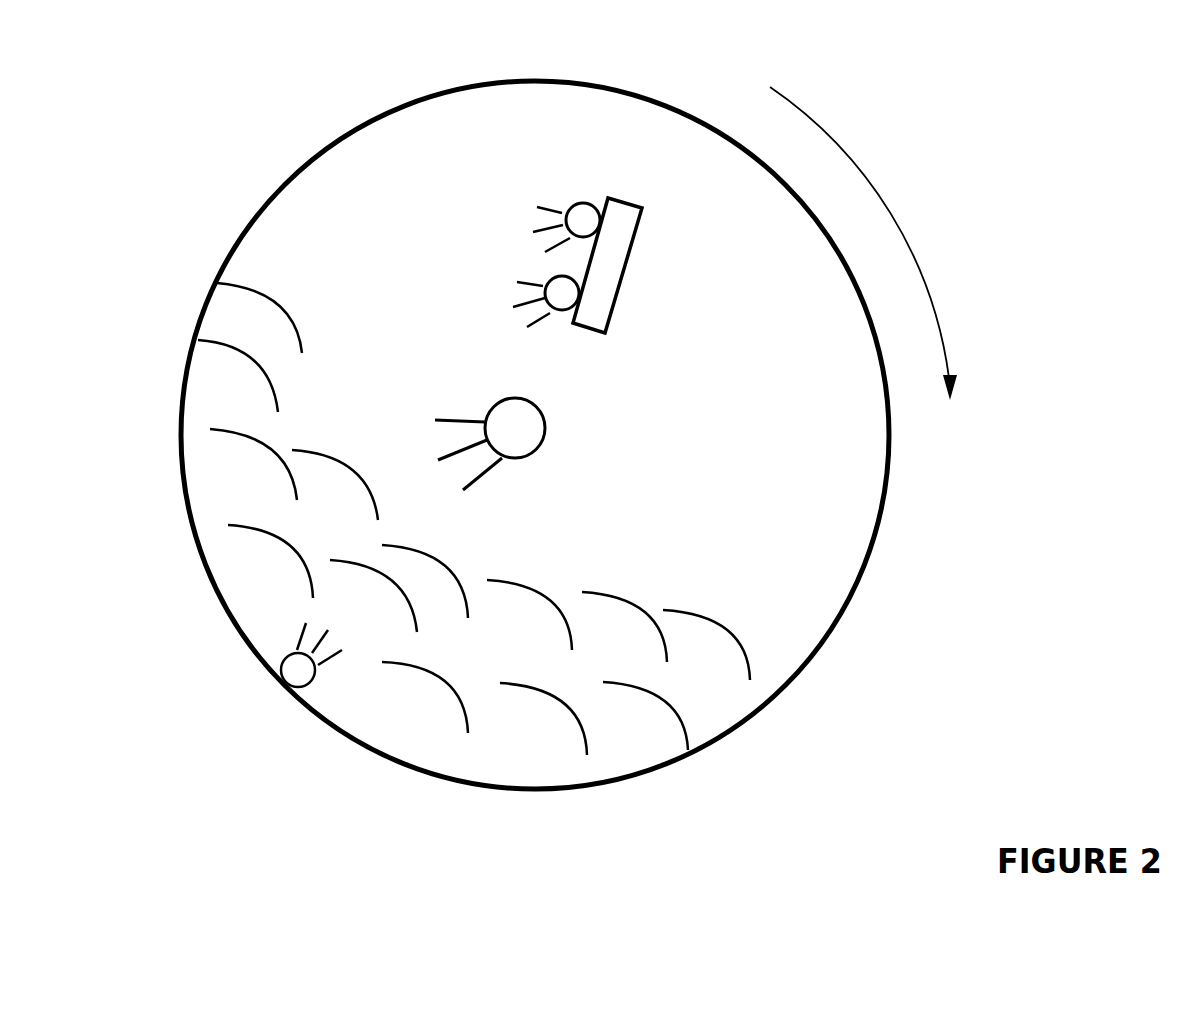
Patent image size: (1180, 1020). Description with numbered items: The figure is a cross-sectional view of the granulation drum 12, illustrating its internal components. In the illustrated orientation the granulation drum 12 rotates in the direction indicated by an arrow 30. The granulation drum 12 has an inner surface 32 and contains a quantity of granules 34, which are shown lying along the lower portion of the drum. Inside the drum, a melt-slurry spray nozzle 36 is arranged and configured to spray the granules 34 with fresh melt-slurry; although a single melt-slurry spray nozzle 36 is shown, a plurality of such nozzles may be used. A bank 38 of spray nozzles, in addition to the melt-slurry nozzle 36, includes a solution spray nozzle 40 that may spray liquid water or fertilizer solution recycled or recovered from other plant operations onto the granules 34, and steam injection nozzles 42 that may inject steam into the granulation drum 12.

The granulation drum 12 is at (240, 188).
The arrow 30 is at (915, 220).
The inner surface 32 is at (820, 633).
The granules 34 is at (524, 658).
The melt-slurry spray nozzle 36 is at (525, 432).
The bank of spray nozzles 38 is at (623, 235).
The solution spray nozzle 40 is at (582, 212).
The steam injection nozzle 42 is at (545, 285).